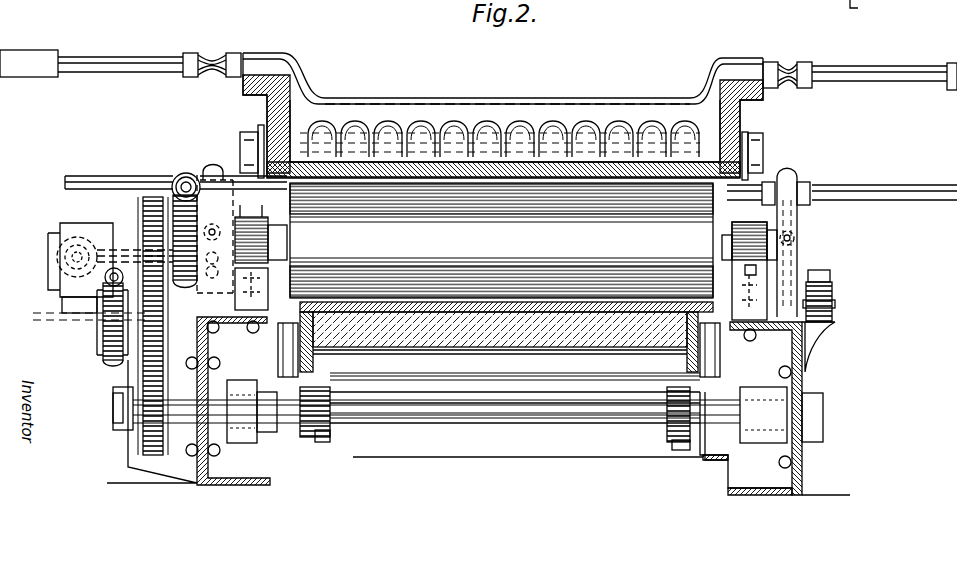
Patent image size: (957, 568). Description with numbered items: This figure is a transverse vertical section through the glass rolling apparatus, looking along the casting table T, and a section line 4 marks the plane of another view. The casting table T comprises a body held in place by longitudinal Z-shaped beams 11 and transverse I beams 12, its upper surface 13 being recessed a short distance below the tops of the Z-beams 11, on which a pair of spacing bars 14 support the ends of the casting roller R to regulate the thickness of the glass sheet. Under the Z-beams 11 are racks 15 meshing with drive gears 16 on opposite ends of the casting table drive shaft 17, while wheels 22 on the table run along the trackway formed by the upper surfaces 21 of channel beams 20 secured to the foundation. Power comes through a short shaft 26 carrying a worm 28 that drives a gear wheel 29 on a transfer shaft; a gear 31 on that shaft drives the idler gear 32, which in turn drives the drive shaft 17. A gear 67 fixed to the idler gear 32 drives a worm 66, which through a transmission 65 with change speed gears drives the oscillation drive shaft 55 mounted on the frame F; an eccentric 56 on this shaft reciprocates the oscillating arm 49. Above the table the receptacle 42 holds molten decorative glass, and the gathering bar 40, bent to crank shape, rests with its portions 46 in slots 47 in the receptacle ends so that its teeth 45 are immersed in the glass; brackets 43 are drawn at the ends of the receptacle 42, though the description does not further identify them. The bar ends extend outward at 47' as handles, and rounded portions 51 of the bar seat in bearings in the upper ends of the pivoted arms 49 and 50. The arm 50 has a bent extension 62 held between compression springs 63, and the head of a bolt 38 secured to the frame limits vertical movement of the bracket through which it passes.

The section line 4 is at (860, 8).
The handle ends of bar 47' is at (91, 44).
The slots in receptacle ends 47 is at (842, 55).
The rounded portions of bar 51 is at (210, 58).
The bar portions 46 is at (276, 62).
The receptacle 42 is at (400, 72).
The gathering bar 40 is at (590, 118).
The teeth 45 is at (462, 135).
The bracket 43 is at (245, 150).
The short shaft 26 is at (185, 180).
The worm 28 is at (174, 183).
The oscillating arm 49 is at (212, 172).
The gear wheel 29 is at (168, 222).
The gear 31 is at (182, 226).
The idler gear 32 is at (140, 362).
The gear 67 is at (105, 348).
The worm 66 is at (108, 279).
The eccentric 56 is at (70, 233).
The oscillation drive shaft 55 is at (72, 257).
The transmission 65 is at (62, 290).
The casting roller R is at (501, 240).
The spacing bars 14 is at (300, 302).
The Z-shaped beams 11 is at (313, 318).
The upper surface of table 13 is at (552, 318).
The casting table T is at (452, 337).
The casting table drive shaft 17 is at (482, 412).
The transverse I beams 12 is at (545, 380).
The wheels 22 is at (290, 360).
The racks 15 is at (335, 385).
The upper surfaces of channel beams 21 is at (285, 385).
The drive gears 16 is at (325, 442).
The channel beams 20 is at (290, 447).
The frame F is at (806, 371).
The pivoted arm 50 is at (796, 216).
The bolt 38 is at (745, 288).
The compression springs 63 is at (830, 288).
The bent extension 62 is at (835, 305).